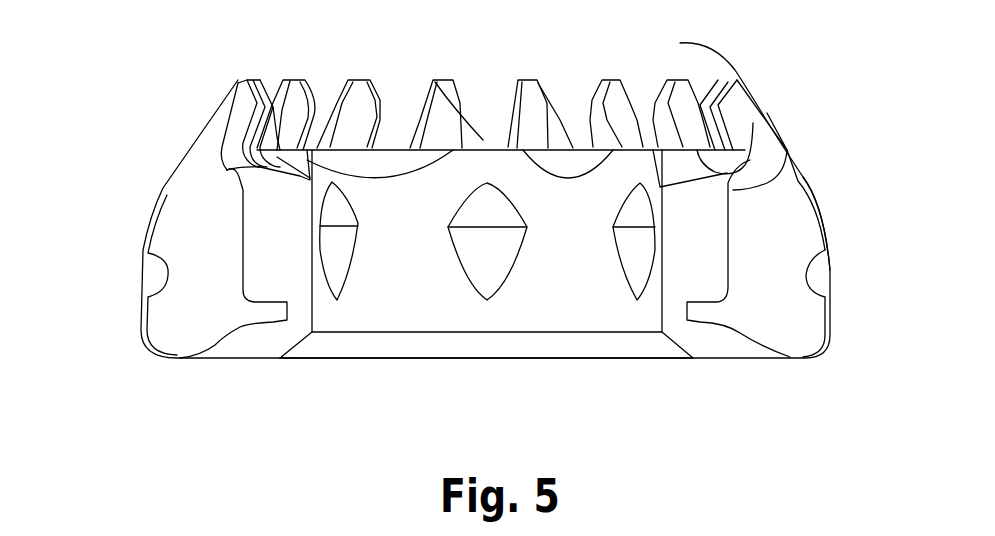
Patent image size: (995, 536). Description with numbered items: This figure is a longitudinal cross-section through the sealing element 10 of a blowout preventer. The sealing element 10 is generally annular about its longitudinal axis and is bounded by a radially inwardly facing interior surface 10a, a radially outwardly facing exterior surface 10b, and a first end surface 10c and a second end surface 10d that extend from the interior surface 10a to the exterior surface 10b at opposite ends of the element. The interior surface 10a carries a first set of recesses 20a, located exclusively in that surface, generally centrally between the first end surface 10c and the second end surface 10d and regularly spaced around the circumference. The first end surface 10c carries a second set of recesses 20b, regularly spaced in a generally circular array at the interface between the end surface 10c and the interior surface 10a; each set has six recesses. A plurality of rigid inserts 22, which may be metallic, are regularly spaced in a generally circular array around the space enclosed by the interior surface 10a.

The sealing element 10 is at (529, 243).
The radially inwardly facing interior surface 10a is at (620, 325).
The radially outwardly facing exterior surface 10b is at (831, 273).
The first end surface 10c is at (432, 80).
The second end surface 10d is at (652, 348).
The first set of recesses 20a is at (323, 252).
The second set of recesses 20b is at (227, 170).
The rigid inserts 22 is at (238, 80).